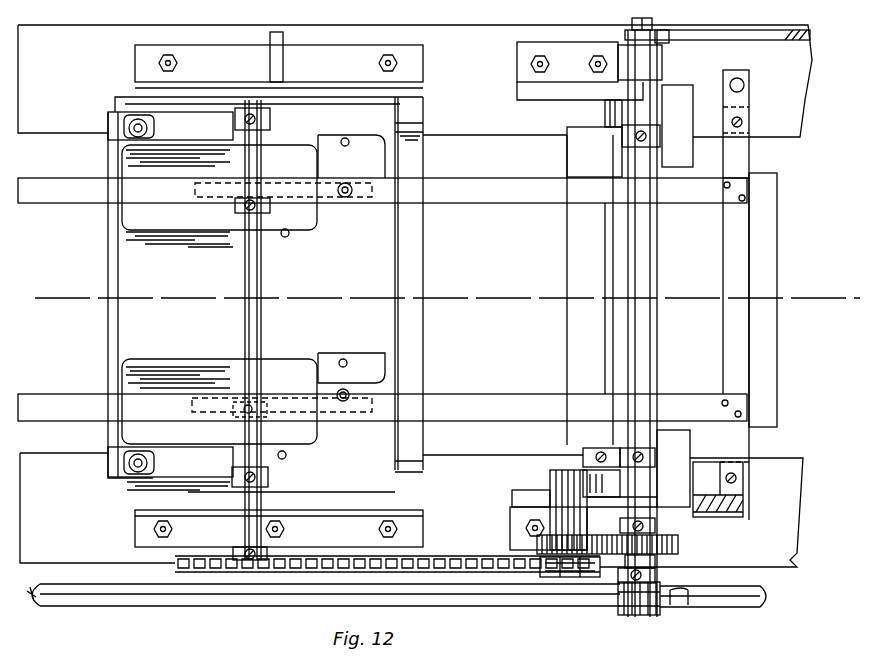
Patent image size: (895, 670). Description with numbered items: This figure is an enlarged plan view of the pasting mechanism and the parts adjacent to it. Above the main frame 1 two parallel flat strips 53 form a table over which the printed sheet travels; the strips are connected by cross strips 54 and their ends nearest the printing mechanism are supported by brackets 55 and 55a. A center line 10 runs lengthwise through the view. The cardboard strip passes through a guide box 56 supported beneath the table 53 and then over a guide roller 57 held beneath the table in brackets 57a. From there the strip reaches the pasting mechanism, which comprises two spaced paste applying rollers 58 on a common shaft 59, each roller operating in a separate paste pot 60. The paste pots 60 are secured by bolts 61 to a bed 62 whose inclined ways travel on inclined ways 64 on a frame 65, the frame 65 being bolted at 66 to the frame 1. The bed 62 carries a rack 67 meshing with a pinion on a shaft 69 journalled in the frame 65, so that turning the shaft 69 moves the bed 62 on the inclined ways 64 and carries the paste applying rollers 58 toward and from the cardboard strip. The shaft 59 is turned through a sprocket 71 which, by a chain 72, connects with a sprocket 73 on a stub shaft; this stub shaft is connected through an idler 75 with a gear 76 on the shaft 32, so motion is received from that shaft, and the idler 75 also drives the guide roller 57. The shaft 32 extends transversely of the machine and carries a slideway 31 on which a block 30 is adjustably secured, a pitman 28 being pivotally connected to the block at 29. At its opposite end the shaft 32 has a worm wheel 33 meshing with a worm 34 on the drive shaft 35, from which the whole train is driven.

The frame 1 is at (498, 136).
The center line 10 is at (442, 298).
The pitman 28 is at (725, 33).
The pivotal connection 29 is at (662, 30).
The block 30 is at (623, 40).
The slideway 31 is at (655, 70).
The shaft 32 is at (658, 228).
The worm wheel 33 is at (675, 600).
The worm 34 is at (642, 615).
The drive shaft 35 is at (486, 607).
The flat strips 53 is at (524, 200).
The cross strips 54 is at (733, 338).
The bracket 55 is at (747, 503).
The bracket 55a is at (750, 102).
The guide box 56 is at (776, 250).
The guide roller 57 is at (565, 272).
The brackets 57a is at (556, 96).
The paste applying rollers 58 is at (200, 190).
The shaft 59 is at (262, 262).
The paste pot 60 is at (145, 232).
The bolts 61 is at (128, 128).
The bed 62 is at (108, 258).
The inclined ways 64 is at (418, 126).
The frame 65 is at (414, 254).
The bolts 66 is at (158, 58).
The rack 67 is at (150, 100).
The shaft 69 is at (270, 66).
The sprocket 71 is at (245, 575).
The chain 72 is at (478, 556).
The sprocket 73 is at (580, 580).
The idler 75 is at (534, 530).
The gear 76 is at (680, 546).